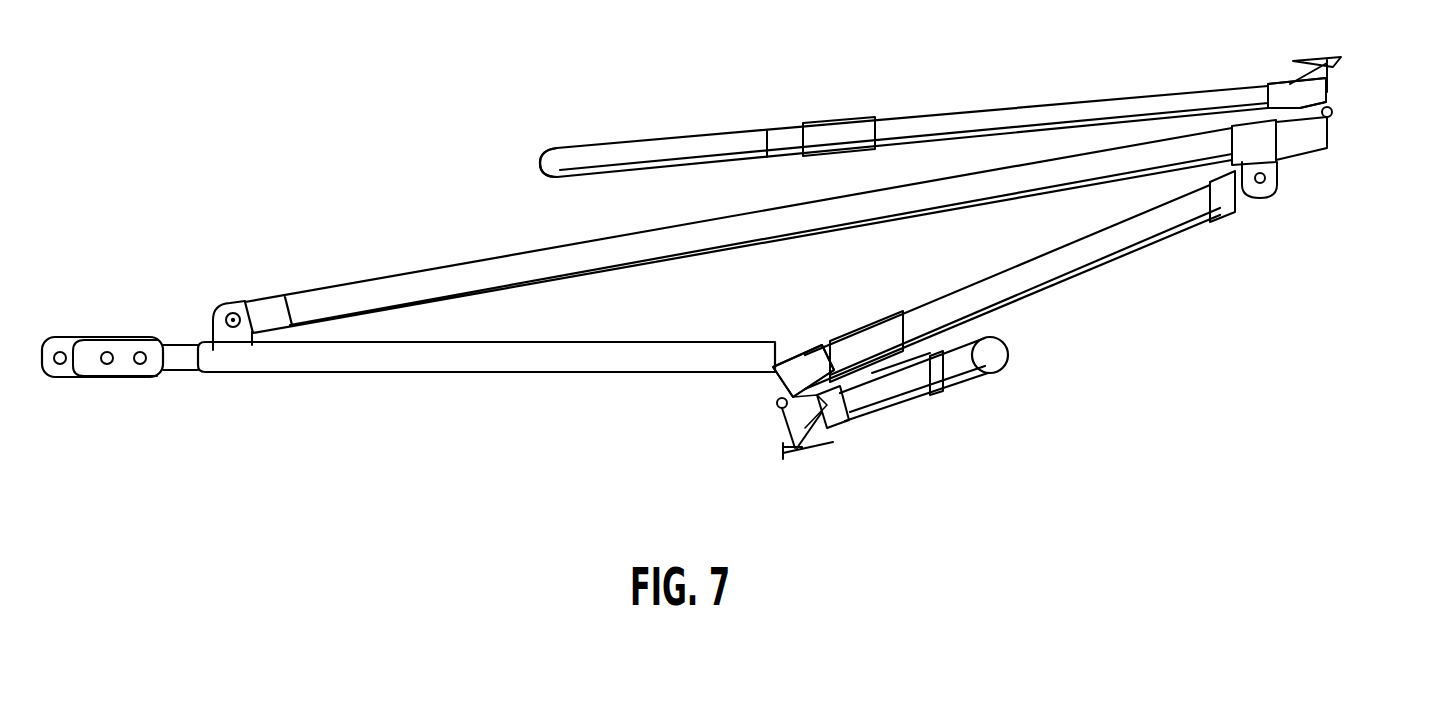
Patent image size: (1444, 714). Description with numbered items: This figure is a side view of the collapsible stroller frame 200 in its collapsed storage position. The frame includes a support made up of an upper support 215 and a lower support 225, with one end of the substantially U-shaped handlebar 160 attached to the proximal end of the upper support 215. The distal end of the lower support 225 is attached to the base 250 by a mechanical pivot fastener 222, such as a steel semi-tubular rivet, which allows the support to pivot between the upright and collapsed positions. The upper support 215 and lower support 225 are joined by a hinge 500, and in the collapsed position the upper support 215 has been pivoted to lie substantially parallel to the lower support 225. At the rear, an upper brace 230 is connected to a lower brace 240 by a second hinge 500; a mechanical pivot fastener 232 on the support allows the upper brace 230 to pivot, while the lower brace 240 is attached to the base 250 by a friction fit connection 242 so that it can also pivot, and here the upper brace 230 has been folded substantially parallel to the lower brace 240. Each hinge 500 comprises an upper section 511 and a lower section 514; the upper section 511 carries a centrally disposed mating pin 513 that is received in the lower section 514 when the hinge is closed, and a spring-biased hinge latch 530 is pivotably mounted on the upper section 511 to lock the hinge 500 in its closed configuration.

The frame 200 is at (345, 101).
The handlebar 160 is at (560, 165).
The upper support 215 is at (1037, 112).
The mechanical pivot fastener 222 is at (226, 316).
The lower support 225 is at (638, 256).
The upper brace 230 is at (1140, 234).
The mechanical pivot fastener 232 is at (1268, 186).
The lower brace 240 is at (920, 385).
The friction fit connection 242 is at (995, 360).
The base 250 is at (443, 374).
The hinge 500 is at (1356, 93).
The upper section 511 is at (1280, 88).
The mating pin 513 is at (1333, 100).
The lower section 514 is at (1318, 153).
The hinge latch 530 is at (1307, 56).